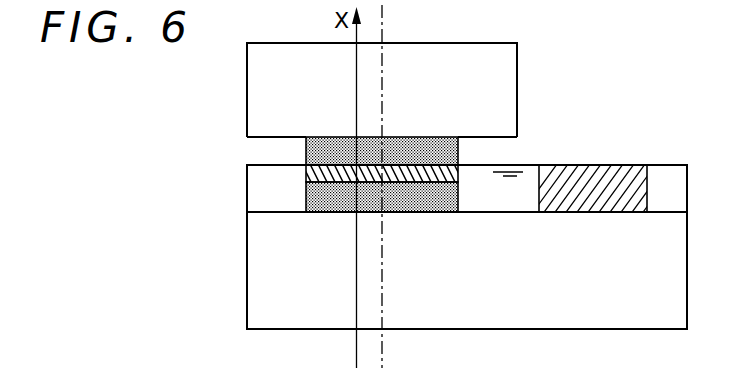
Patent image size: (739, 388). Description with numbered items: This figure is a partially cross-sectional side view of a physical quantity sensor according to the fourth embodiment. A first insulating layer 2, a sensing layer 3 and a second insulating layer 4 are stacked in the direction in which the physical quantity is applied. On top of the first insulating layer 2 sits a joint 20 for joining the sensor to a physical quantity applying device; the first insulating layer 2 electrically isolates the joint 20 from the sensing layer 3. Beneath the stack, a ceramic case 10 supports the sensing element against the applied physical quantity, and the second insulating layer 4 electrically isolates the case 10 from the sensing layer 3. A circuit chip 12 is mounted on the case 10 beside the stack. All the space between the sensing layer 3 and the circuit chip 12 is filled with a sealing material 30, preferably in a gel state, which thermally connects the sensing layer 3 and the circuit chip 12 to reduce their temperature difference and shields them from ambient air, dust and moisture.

The joint 20 is at (507, 81).
The case 10 is at (494, 313).
The first insulating layer 2 is at (313, 150).
The sensing layer 3 is at (310, 171).
The second insulating layer 4 is at (312, 198).
The circuit chip 12 is at (613, 177).
The sealing material 30 is at (530, 173).